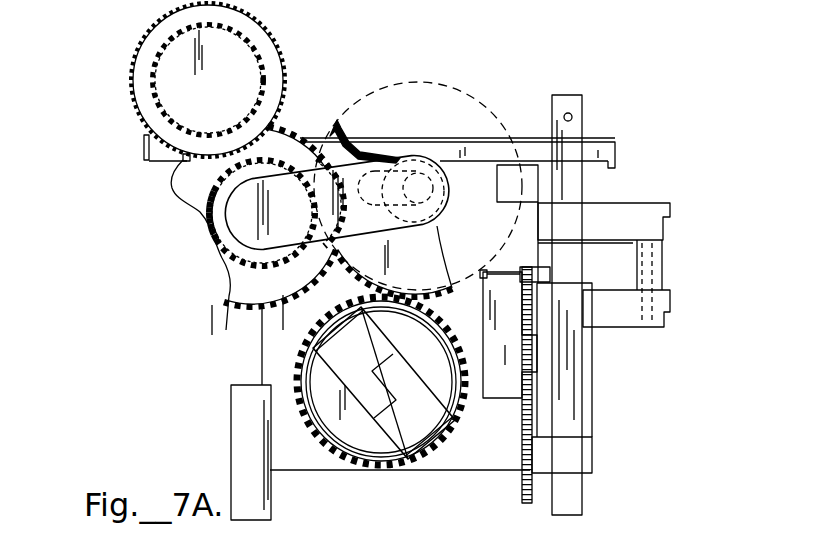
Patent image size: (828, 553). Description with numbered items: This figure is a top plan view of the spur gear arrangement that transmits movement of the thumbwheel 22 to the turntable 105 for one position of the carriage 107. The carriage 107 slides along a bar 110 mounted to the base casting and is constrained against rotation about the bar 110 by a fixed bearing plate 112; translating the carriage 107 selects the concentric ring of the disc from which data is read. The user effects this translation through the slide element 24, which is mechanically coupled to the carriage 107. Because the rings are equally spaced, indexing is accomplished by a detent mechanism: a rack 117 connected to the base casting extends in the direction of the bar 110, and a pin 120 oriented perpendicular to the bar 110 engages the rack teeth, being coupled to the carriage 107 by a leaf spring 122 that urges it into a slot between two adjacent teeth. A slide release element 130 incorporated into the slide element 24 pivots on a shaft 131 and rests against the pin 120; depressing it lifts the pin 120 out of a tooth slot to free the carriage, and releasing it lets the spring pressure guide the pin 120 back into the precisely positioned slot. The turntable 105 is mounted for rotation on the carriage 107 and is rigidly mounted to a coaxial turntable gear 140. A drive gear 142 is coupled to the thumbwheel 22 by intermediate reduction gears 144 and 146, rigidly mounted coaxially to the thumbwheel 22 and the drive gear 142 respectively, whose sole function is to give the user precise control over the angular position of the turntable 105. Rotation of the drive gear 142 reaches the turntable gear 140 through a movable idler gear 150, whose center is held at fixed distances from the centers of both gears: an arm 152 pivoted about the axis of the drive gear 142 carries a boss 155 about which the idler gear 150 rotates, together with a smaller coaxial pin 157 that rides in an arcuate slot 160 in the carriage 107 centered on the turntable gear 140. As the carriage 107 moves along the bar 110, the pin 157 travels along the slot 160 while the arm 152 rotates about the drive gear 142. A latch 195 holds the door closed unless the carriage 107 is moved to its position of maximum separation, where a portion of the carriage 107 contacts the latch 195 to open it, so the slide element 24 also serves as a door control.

The thumbwheel 22 is at (136, 69).
The intermediate reduction gear 144 is at (267, 60).
The intermediate reduction gear 146 is at (176, 182).
The drive gear 142 is at (205, 236).
The arm 152 is at (248, 227).
The arcuate slot 160 is at (382, 180).
The boss 155 is at (441, 201).
The pin 157 is at (438, 222).
The movable idler gear 150 is at (417, 84).
The latch 195 is at (540, 140).
The bar 110 is at (576, 133).
The slide element 24 is at (614, 214).
The slide release element 130 is at (661, 274).
The shaft 131 is at (635, 310).
The pin 120 is at (550, 274).
The leaf spring 122 is at (500, 312).
The rack 117 is at (521, 492).
The carriage 107 is at (512, 458).
The fixed bearing plate 112 is at (244, 447).
The turntable gear 140 is at (415, 472).
The turntable 105 is at (376, 400).